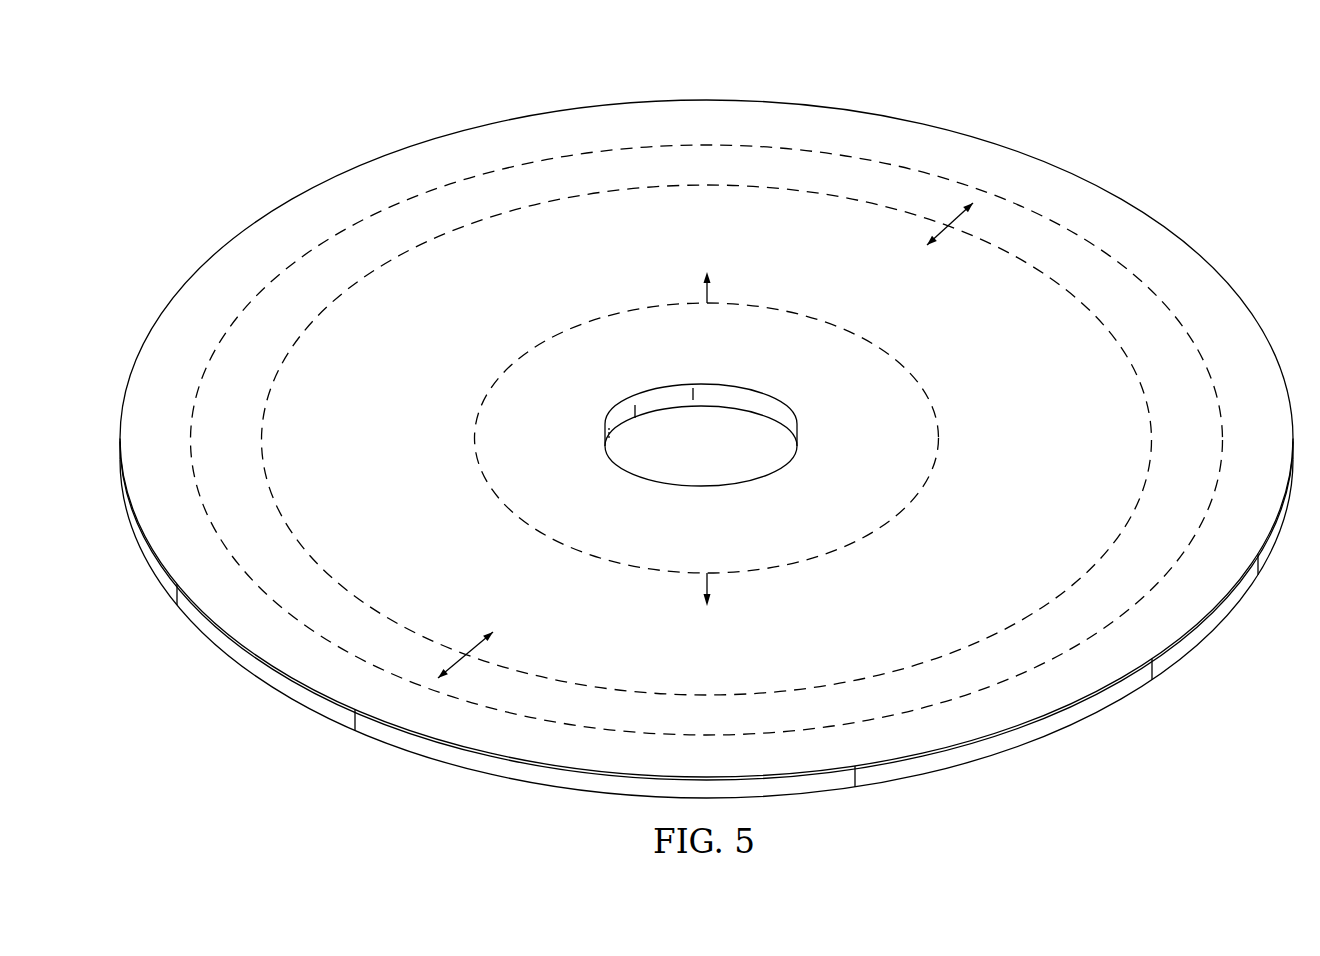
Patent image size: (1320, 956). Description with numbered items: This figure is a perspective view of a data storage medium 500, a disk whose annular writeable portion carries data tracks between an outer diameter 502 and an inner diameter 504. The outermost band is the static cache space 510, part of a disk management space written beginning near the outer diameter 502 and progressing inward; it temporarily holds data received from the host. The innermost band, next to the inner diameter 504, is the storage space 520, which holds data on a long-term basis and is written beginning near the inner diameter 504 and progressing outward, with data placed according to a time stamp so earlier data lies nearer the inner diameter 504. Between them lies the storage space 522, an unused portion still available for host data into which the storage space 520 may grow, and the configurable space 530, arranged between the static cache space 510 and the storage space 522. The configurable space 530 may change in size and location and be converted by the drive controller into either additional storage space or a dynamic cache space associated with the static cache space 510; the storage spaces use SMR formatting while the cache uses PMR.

The data storage medium 500 is at (1184, 127).
The outer diameter 502 is at (333, 172).
The inner diameter 504 is at (745, 403).
The static cache space 510 is at (178, 455).
The configurable space 530 is at (248, 455).
The storage space 522 is at (388, 455).
The storage space 520 is at (559, 455).